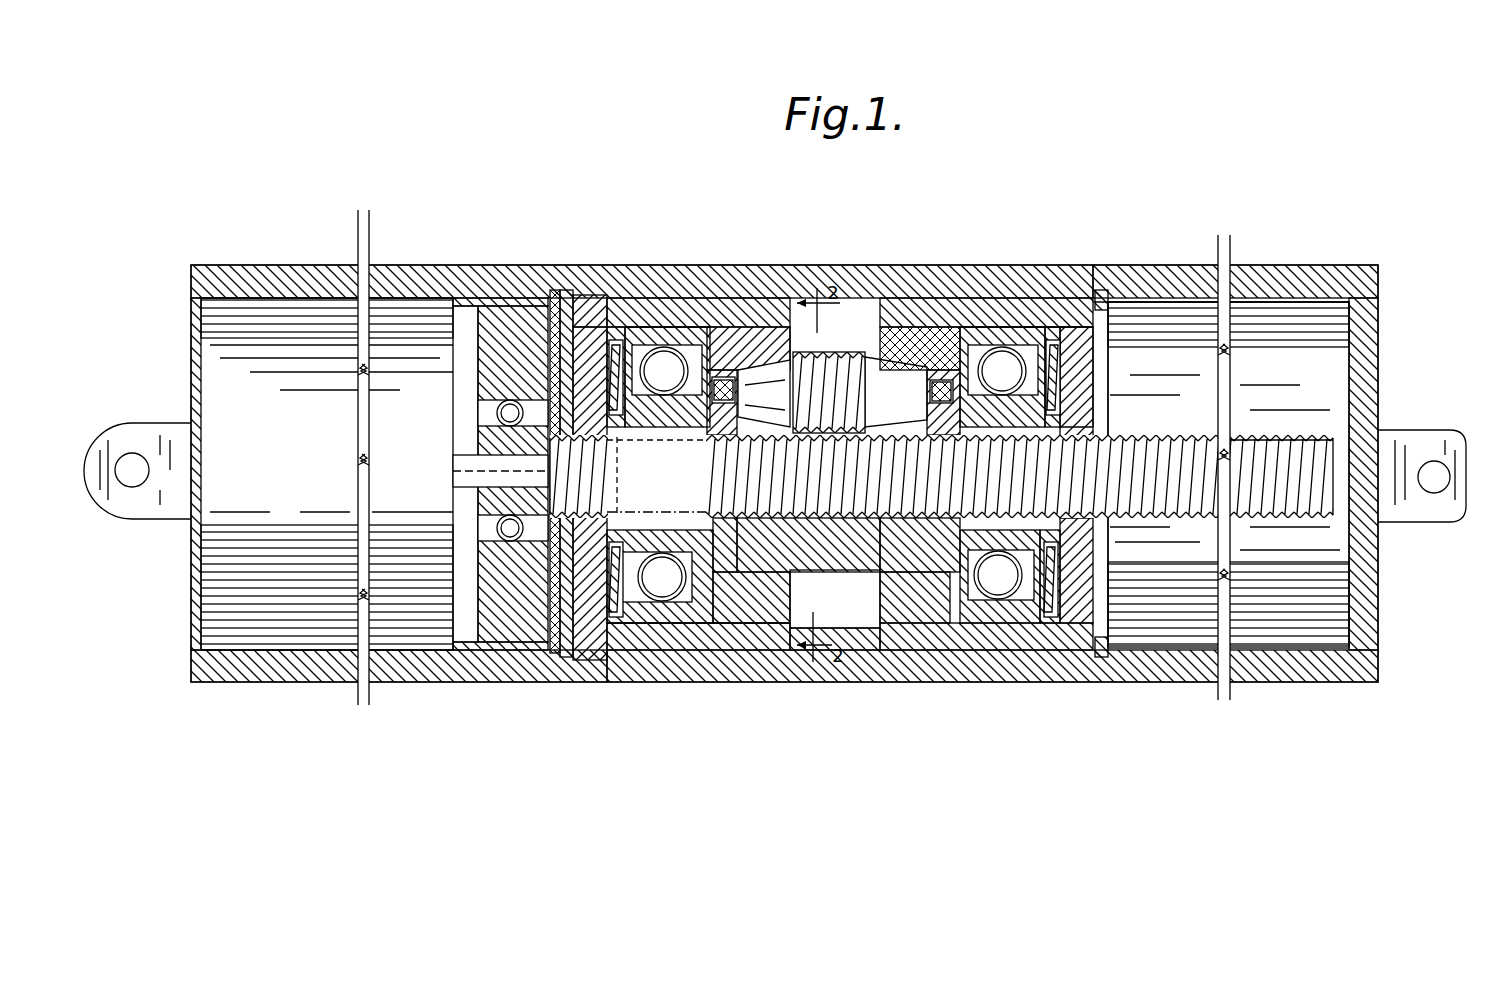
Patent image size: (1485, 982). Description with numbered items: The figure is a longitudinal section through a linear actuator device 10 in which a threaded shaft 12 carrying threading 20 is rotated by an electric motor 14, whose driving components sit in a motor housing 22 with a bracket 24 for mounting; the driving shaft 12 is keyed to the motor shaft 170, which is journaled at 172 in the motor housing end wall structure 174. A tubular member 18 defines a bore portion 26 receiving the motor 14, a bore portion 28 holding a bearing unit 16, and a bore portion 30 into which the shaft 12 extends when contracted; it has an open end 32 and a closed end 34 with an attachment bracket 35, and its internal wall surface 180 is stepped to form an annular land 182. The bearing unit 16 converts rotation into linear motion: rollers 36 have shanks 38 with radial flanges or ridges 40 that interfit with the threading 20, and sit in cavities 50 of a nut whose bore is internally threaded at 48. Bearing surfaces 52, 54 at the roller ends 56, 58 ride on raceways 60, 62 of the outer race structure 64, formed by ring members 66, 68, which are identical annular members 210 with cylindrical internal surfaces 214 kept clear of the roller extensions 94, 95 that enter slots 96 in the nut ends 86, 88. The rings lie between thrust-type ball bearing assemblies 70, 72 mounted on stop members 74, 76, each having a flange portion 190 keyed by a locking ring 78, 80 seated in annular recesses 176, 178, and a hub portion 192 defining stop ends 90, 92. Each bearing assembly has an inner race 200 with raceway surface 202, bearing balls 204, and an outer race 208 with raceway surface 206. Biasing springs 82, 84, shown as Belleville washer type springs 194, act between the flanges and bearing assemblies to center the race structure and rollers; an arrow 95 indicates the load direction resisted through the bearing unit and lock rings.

The linear actuator device 10 is at (1288, 248).
The threaded shaft 12 is at (1337, 455).
The electric motor 14 is at (405, 316).
The bearing unit 16 is at (905, 318).
The tubular member 18 is at (1190, 280).
The threading 20 is at (1302, 436).
The motor housing 22 is at (275, 325).
The bracket 24 is at (130, 432).
The bore portion 26 is at (395, 652).
The bore portion 28 is at (715, 300).
The bore portion 30 is at (1320, 300).
The open end 32 is at (215, 282).
The closed end 34 is at (1325, 684).
The attachment bracket 35 is at (1436, 520).
The rollers 36 is at (868, 358).
The shanks 38 is at (940, 358).
The radial flanges or ridges 40 is at (835, 354).
The internal threading 48 is at (735, 602).
The operating cavity or recess 50 is at (808, 545).
The bearing surface 52 is at (985, 328).
The bearing surface 54 is at (760, 340).
The roller end 56 is at (1020, 345).
The roller end 58 is at (695, 368).
The raceway 60 is at (950, 600).
The raceway 62 is at (775, 592).
The outer race structure 64 is at (1002, 346).
The ring member 66 is at (900, 640).
The ring member 68 is at (690, 640).
The ball bearing assembly 70 is at (1075, 320).
The ball bearing assembly 72 is at (600, 328).
The stop member 74 is at (1097, 383).
The stop member 76 is at (590, 310).
The locking ring 78 is at (1225, 300).
The locking ring 80 is at (553, 300).
The biasing spring 82 is at (1088, 374).
The biasing spring 84 is at (604, 368).
The nut end 86 is at (1012, 592).
The nut end 88 is at (668, 652).
The stop member end 90 is at (960, 530).
The stop member end 92 is at (716, 537).
The roller extension 94 is at (1032, 312).
The roller extension 95 is at (1380, 283).
The slots 96 is at (905, 408).
The motor shaft 170 is at (480, 480).
The journal 172 is at (480, 510).
The motor housing end wall structure 174 is at (495, 304).
The annular recess 176 is at (1125, 305).
The annular recess 178 is at (565, 296).
The internal wall surface 180 is at (1245, 330).
The annular land 182 is at (680, 358).
The flange portion 190 is at (560, 660).
The hub portion 192 is at (640, 632).
The Belleville washer type springs 194 is at (560, 622).
The inner race 200 is at (1087, 426).
The raceway surface 202 is at (1098, 305).
The bearing balls 204 is at (652, 604).
The raceway surface 206 is at (665, 328).
The outer race 208 is at (650, 340).
The annular member 210 is at (790, 330).
The internal surface 214 is at (990, 602).